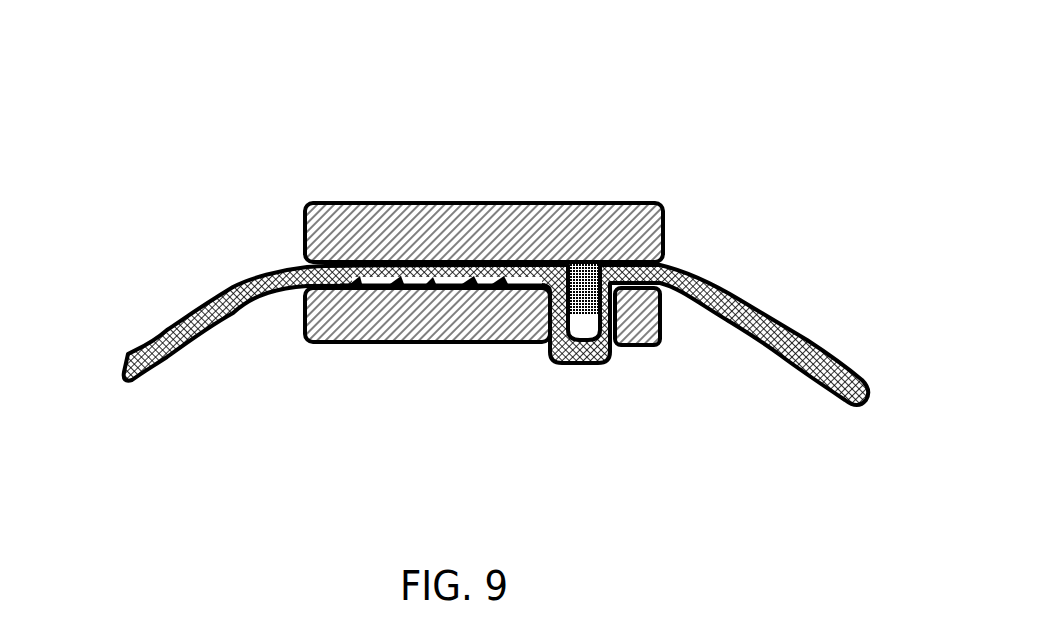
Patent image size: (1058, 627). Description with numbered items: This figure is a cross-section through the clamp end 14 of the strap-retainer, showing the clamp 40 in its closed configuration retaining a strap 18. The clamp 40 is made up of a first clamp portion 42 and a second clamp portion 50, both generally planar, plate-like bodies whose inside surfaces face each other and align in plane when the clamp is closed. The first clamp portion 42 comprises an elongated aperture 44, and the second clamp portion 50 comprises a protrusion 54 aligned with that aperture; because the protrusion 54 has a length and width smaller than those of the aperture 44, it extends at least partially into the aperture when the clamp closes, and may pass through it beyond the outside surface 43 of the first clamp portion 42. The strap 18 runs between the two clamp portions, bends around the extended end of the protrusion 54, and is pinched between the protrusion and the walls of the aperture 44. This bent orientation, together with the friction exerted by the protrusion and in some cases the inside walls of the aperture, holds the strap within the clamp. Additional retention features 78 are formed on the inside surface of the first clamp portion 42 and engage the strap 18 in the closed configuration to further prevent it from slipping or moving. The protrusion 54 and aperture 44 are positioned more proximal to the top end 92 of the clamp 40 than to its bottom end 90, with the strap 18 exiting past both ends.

The clamp end 14 is at (397, 185).
The strap 18 is at (213, 298).
The clamp 40 is at (360, 325).
The first clamp portion 42 is at (358, 343).
The outside surface 43 is at (485, 265).
The aperture 44 is at (600, 365).
The second clamp portion 50 is at (520, 227).
The protrusion 54 is at (607, 264).
The retention features 78 is at (455, 290).
The bottom end 90 is at (306, 225).
The top end 92 is at (667, 233).